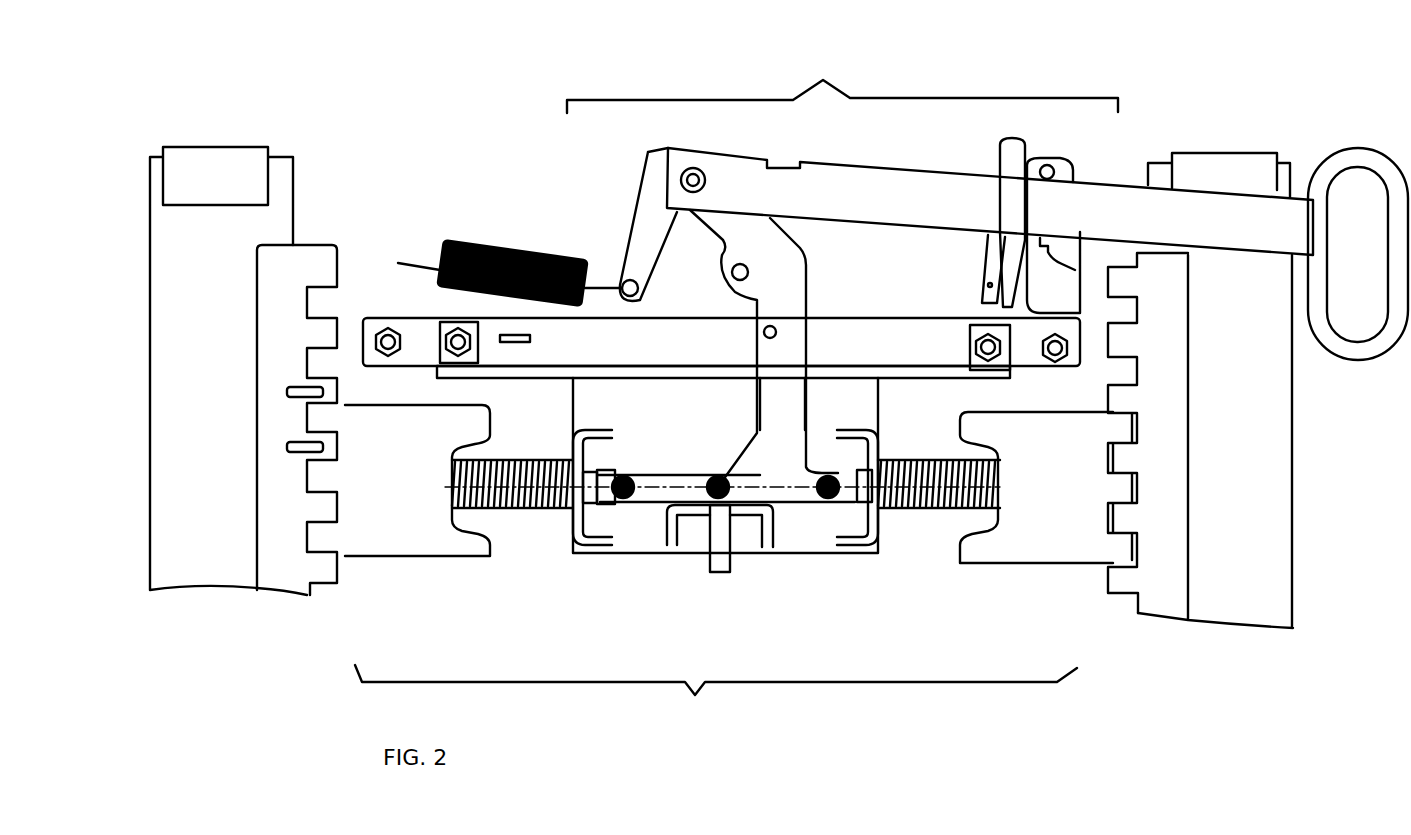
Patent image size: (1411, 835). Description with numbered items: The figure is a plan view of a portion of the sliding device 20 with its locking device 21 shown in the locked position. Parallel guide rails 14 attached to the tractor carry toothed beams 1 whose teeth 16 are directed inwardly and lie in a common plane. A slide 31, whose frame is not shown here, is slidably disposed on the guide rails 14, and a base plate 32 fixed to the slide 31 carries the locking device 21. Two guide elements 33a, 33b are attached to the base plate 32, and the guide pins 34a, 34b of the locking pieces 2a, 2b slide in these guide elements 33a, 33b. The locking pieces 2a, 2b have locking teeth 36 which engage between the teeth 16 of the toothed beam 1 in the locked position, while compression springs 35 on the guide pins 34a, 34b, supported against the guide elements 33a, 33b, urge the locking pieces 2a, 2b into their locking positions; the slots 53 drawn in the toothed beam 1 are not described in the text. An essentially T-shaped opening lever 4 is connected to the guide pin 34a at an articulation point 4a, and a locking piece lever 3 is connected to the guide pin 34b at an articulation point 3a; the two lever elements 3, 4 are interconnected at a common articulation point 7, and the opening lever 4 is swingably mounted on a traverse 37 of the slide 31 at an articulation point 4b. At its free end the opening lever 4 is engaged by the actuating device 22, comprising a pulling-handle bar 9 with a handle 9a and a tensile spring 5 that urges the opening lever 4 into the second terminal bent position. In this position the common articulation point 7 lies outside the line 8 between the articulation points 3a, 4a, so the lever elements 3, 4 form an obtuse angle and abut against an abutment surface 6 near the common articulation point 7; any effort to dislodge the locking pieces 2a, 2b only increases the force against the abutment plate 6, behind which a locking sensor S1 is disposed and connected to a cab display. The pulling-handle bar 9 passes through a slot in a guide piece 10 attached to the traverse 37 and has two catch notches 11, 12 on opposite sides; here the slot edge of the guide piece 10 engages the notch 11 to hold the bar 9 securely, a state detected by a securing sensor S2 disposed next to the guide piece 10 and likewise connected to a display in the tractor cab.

The toothed beam 1 is at (323, 583).
The locking piece 2a is at (1008, 553).
The locking piece 2b is at (410, 555).
The locking piece lever 3 is at (655, 466).
The articulation point 3a is at (612, 503).
The opening lever 4 is at (800, 300).
The articulation point 4a is at (837, 505).
The articulation point 4b is at (776, 330).
The tensile spring 5 is at (493, 250).
The abutment surface 6 is at (670, 508).
The common articulation point 7 is at (727, 500).
The line 8 is at (678, 490).
The pulling-handle bar 9 is at (966, 212).
The handle 9a is at (1365, 350).
The guide piece 10 is at (997, 147).
The catch notch 11 is at (1046, 262).
The catch notch 12 is at (787, 163).
The guide rail 14 is at (198, 563).
The teeth 16 is at (325, 327).
The sliding device 20 is at (444, 90).
The locking device 21 is at (716, 711).
The actuating device 22 is at (842, 75).
The slide 31 is at (1098, 645).
The base plate 32 is at (688, 542).
The guide element 33a is at (880, 547).
The guide element 33b is at (577, 452).
The guide pin 34a is at (875, 443).
The guide pin 34b is at (607, 505).
The compression spring 35 is at (527, 507).
The locking teeth 36 is at (330, 477).
The traverse 37 is at (660, 337).
The slot 53 is at (285, 447).
The locking sensor S1 is at (720, 572).
The securing sensor S2 is at (988, 284).